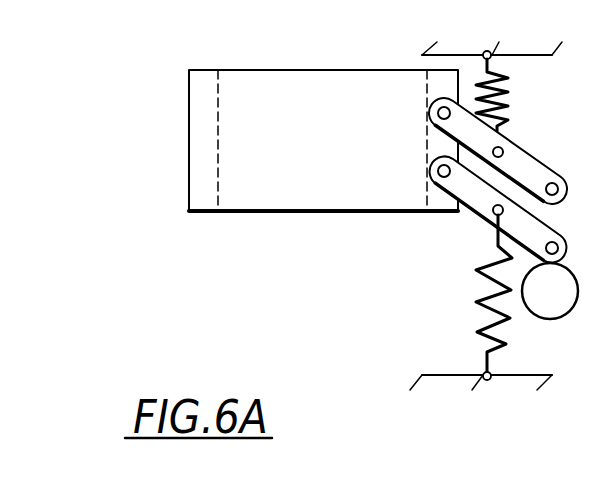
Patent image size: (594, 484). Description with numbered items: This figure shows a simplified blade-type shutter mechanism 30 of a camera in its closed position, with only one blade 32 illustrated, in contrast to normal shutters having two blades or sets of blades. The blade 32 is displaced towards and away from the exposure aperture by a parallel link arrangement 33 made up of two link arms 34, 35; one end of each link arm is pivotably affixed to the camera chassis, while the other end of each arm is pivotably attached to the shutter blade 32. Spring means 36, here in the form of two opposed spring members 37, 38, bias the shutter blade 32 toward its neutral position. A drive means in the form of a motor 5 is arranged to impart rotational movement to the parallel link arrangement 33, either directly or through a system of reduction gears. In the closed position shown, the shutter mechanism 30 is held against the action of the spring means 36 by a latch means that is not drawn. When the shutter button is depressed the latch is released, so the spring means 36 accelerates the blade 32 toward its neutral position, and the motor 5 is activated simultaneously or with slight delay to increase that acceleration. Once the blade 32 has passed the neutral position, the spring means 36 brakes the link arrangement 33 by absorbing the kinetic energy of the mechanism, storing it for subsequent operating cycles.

The motor 5 is at (560, 313).
The blade-type shutter mechanism 30 is at (179, 232).
The blade 32 is at (197, 117).
The parallel link arrangement 33 is at (521, 128).
The link arm 34 is at (519, 156).
The link arm 35 is at (530, 225).
The spring means 36 is at (448, 262).
The spring member 37 is at (484, 312).
The spring member 38 is at (506, 79).